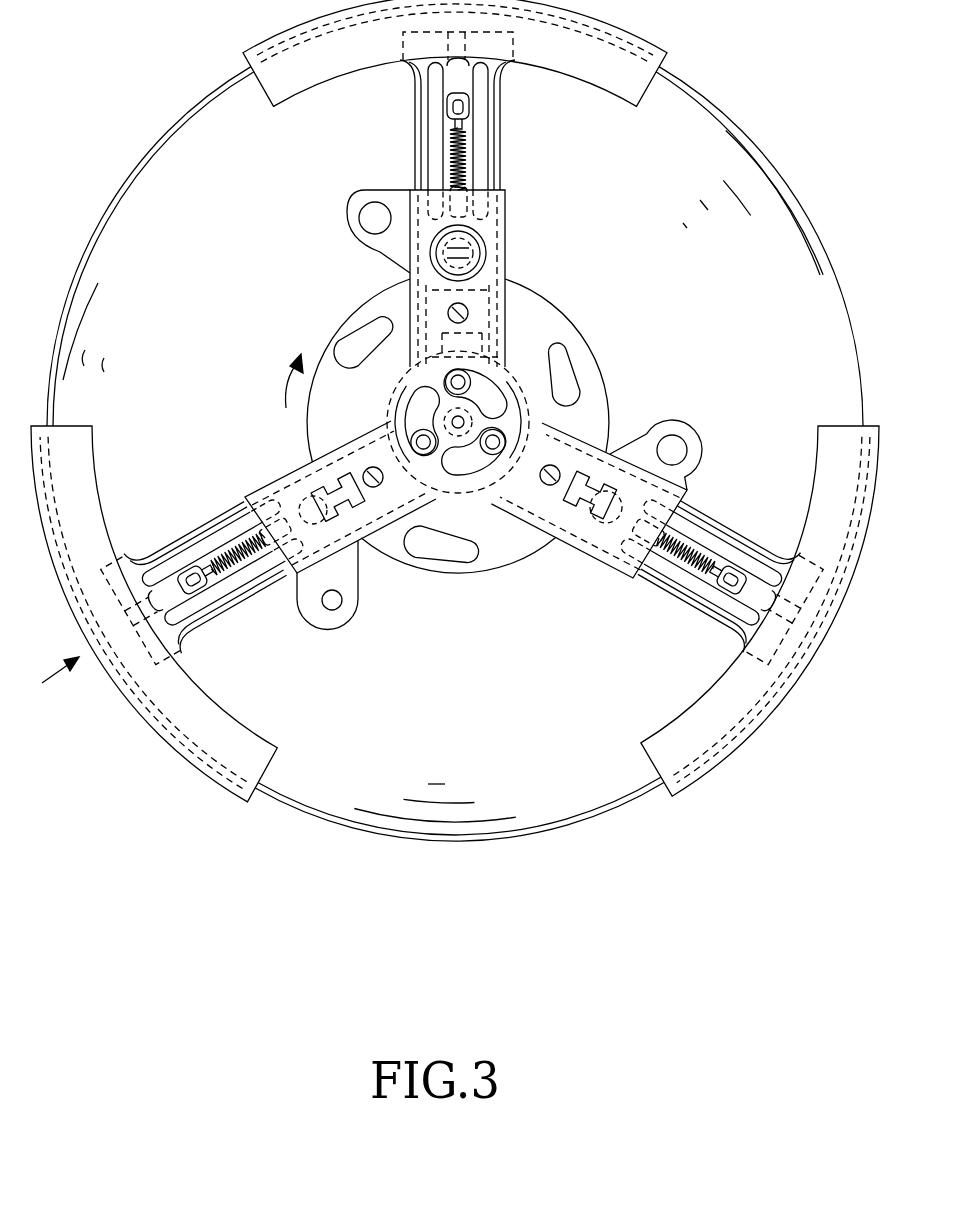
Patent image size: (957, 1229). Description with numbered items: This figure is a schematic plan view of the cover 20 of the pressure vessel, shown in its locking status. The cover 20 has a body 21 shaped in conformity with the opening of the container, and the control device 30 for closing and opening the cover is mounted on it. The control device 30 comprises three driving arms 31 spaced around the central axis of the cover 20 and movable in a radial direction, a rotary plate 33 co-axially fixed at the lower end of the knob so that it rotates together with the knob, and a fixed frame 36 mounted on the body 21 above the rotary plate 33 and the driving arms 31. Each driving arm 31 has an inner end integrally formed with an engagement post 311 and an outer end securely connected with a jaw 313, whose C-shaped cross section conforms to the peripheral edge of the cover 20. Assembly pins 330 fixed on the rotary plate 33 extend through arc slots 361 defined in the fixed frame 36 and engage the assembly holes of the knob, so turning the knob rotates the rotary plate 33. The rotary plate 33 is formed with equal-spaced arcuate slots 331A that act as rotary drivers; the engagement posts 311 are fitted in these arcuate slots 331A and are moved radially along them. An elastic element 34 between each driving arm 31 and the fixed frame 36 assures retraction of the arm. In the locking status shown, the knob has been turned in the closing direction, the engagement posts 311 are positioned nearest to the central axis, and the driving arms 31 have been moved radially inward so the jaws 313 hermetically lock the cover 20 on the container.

The cover 20 is at (760, 128).
The body 21 is at (410, 804).
The control device 30 is at (533, 292).
The driving arm 31 is at (224, 538).
The engagement post 311 is at (388, 470).
The jaw 313 is at (233, 746).
The rotary plate 33 is at (352, 316).
The arcuate slot 331A is at (410, 313).
The assembly pin 330 is at (425, 447).
The elastic element 34 is at (237, 572).
The fixed frame 36 is at (556, 397).
The arc slot 361 is at (494, 396).